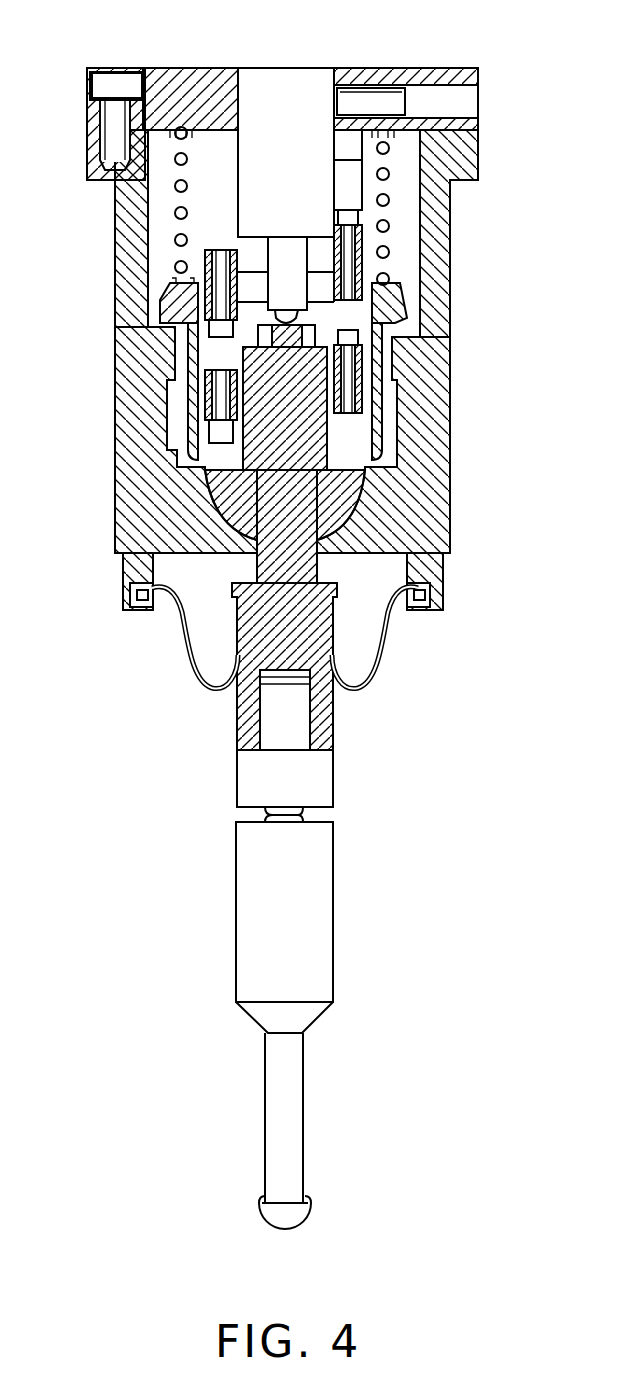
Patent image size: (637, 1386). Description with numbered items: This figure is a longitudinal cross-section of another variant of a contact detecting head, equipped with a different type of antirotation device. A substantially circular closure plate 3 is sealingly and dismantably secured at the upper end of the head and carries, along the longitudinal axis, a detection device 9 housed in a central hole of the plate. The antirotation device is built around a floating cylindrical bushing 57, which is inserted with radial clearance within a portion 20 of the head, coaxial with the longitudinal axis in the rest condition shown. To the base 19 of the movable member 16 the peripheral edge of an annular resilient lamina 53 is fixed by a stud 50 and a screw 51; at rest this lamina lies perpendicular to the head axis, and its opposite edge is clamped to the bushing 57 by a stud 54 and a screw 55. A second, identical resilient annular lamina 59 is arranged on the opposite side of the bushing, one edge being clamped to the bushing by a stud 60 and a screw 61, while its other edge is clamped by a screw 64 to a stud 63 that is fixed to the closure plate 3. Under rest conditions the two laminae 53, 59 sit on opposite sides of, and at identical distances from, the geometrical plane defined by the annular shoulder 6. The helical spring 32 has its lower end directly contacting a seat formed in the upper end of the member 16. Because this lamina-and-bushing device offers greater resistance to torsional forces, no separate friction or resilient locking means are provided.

The closure plate 3 is at (180, 68).
The detection device 9 is at (286, 72).
The helical spring 32 is at (390, 150).
The screw 64 is at (340, 210).
The screw 61 is at (218, 252).
The resilient annular lamina 59 is at (252, 272).
The stud 60 is at (205, 268).
The stud 63 is at (370, 262).
The member 16 is at (417, 299).
The screw 55 is at (345, 325).
The cylindrical bushing 57 is at (247, 338).
The annular shoulder 6 is at (412, 340).
The portion 20 is at (175, 380).
The stud 54 is at (400, 394).
The stud 50 is at (200, 410).
The screw 51 is at (205, 445).
The annular resilient lamina 53 is at (395, 436).
The base 19 is at (418, 470).